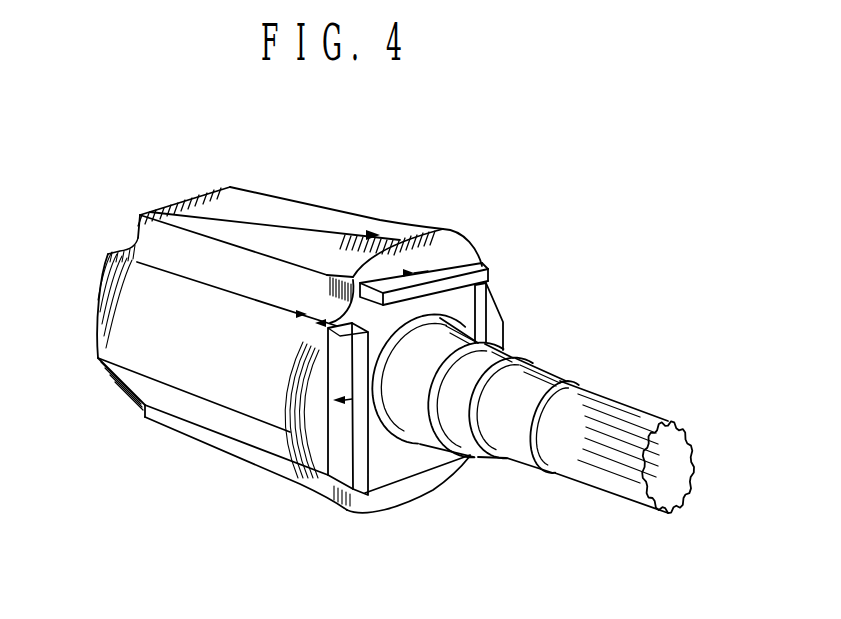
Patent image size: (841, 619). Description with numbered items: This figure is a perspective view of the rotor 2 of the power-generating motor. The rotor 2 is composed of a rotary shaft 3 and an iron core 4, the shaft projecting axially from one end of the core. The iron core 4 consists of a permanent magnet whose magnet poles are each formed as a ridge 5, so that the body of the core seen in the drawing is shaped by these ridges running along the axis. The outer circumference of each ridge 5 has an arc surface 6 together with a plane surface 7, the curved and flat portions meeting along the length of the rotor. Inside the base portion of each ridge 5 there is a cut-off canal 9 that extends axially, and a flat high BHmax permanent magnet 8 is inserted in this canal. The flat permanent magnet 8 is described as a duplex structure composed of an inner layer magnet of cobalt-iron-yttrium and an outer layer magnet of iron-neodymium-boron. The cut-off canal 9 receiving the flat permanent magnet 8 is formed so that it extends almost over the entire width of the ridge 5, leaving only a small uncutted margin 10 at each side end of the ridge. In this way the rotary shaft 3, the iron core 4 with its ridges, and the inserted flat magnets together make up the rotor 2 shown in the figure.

The rotor 2 is at (351, 196).
The rotary shaft 3 is at (550, 387).
The iron core 4 is at (90, 265).
The ridge 5 is at (93, 320).
The arc surface 6 is at (380, 222).
The plane surface 7 is at (183, 208).
The flat high BHmax permanent magnet 8 is at (343, 463).
The cut-off canal 9 is at (445, 252).
The uncutted margin 10 is at (137, 237).